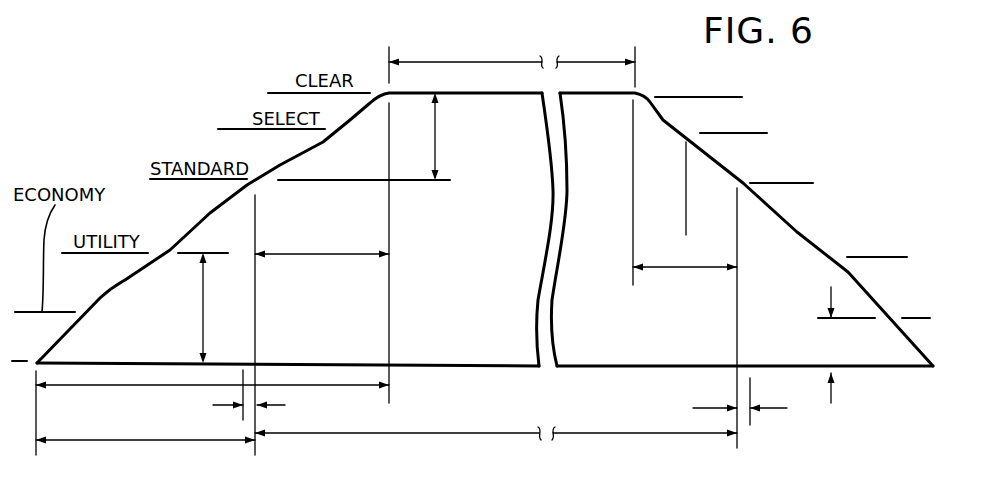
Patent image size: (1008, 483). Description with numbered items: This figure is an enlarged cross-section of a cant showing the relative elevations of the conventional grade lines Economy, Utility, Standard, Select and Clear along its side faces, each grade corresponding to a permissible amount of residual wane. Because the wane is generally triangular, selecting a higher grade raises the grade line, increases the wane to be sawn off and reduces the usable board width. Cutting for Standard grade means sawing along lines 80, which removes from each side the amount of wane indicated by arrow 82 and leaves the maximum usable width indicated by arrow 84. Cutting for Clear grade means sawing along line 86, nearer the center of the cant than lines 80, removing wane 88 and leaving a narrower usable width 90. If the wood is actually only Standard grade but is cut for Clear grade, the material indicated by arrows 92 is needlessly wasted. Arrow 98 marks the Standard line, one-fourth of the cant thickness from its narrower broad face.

The lines 80 is at (255, 293).
The arrow 82 is at (145, 440).
The arrow 84 is at (462, 433).
The line 86 is at (389, 228).
The wane 88 is at (125, 385).
The usable width 90 is at (490, 62).
The arrows 92 is at (320, 254).
The arrow 98 is at (436, 137).